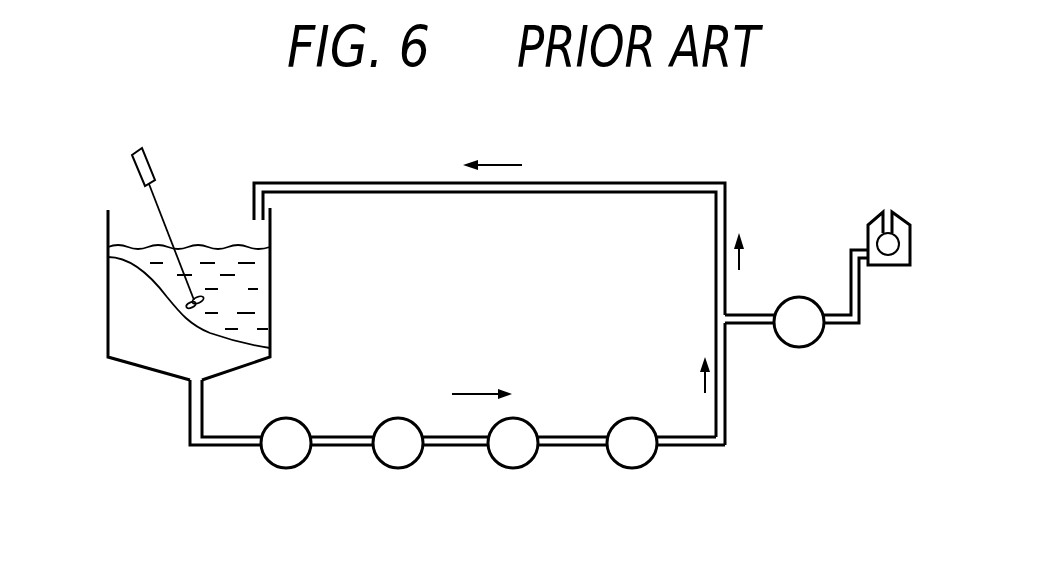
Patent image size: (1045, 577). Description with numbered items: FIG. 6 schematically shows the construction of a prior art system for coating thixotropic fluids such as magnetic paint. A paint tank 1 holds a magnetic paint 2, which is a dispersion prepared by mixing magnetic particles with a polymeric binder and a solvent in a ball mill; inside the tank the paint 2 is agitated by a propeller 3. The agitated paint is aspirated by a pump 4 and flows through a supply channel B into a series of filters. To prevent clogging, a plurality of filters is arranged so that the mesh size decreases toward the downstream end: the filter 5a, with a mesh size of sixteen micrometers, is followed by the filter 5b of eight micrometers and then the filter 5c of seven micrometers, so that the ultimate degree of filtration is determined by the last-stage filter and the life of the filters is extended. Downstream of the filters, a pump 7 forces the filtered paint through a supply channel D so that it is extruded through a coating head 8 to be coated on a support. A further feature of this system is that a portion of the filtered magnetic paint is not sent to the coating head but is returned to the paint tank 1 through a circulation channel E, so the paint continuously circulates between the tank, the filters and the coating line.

The paint tank 1 is at (108, 283).
The magnetic paint 2 is at (209, 258).
The propeller 3 is at (189, 311).
The pump 4 is at (285, 468).
The filter 5a is at (396, 468).
The filter 5b is at (512, 468).
The filter 5c is at (630, 468).
The pump 7 is at (800, 348).
The coating head 8 is at (905, 218).
The supply channel B is at (190, 447).
The supply channel D is at (835, 315).
The circulation channel E is at (545, 186).